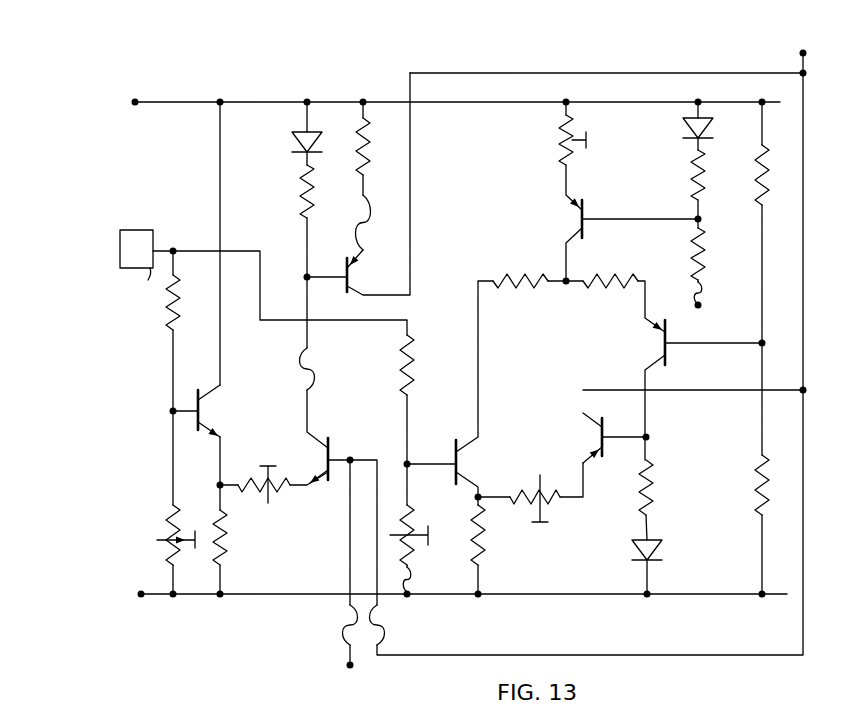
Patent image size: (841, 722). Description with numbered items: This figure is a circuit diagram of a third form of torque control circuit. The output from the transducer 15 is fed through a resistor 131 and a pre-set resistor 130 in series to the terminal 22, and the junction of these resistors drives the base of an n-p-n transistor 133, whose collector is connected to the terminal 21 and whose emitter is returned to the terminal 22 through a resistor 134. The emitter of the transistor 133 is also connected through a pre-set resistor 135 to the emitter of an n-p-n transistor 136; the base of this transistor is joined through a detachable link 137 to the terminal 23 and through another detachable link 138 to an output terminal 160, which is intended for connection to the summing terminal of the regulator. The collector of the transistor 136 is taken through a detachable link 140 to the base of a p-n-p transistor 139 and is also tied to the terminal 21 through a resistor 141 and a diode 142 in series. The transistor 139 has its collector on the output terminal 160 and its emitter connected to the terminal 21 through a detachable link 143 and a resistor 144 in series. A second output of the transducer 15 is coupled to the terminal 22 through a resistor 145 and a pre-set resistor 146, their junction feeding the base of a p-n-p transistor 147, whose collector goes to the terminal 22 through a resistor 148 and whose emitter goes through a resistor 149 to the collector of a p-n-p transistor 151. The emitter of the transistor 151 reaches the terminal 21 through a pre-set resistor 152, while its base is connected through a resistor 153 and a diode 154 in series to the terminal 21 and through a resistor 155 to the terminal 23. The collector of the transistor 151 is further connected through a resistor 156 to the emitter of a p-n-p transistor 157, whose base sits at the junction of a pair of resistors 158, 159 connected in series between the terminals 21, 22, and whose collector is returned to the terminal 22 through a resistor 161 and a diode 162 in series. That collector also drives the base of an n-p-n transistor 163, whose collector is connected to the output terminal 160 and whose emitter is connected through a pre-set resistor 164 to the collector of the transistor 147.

The transducer 15 is at (145, 236).
The terminal 21 is at (136, 100).
The terminal 22 is at (145, 600).
The terminal 23 is at (355, 668).
The pre-set resistor 130 is at (167, 511).
The resistor 131 is at (170, 315).
The n-p-n transistor 133 is at (215, 407).
The resistor 134 is at (228, 550).
The pre-set resistor 135 is at (272, 490).
The n-p-n transistor 136 is at (331, 447).
The detachable link 137 is at (340, 630).
The detachable link 138 is at (385, 623).
The p-n-p transistor 139 is at (343, 262).
The detachable link 140 is at (311, 375).
The resistor 141 is at (301, 194).
The diode 142 is at (290, 137).
The detachable link 143 is at (377, 216).
The resistor 144 is at (372, 148).
The resistor 145 is at (415, 348).
The pre-set resistor 146 is at (424, 550).
The p-n-p transistor 147 is at (468, 447).
The resistor 148 is at (483, 555).
The resistor 149 is at (545, 289).
The p-n-p transistor 151 is at (574, 219).
The pre-set resistor 152 is at (572, 138).
The resistor 153 is at (688, 171).
The diode 154 is at (703, 118).
The resistor 155 is at (688, 253).
The resistor 156 is at (629, 290).
The p-n-p transistor 157 is at (655, 346).
The resistor 158 is at (766, 200).
The resistor 159 is at (755, 470).
The output terminal 160 is at (801, 52).
The resistor 161 is at (652, 482).
The diode 162 is at (657, 548).
The n-p-n transistor 163 is at (596, 437).
The pre-set resistor 164 is at (555, 500).